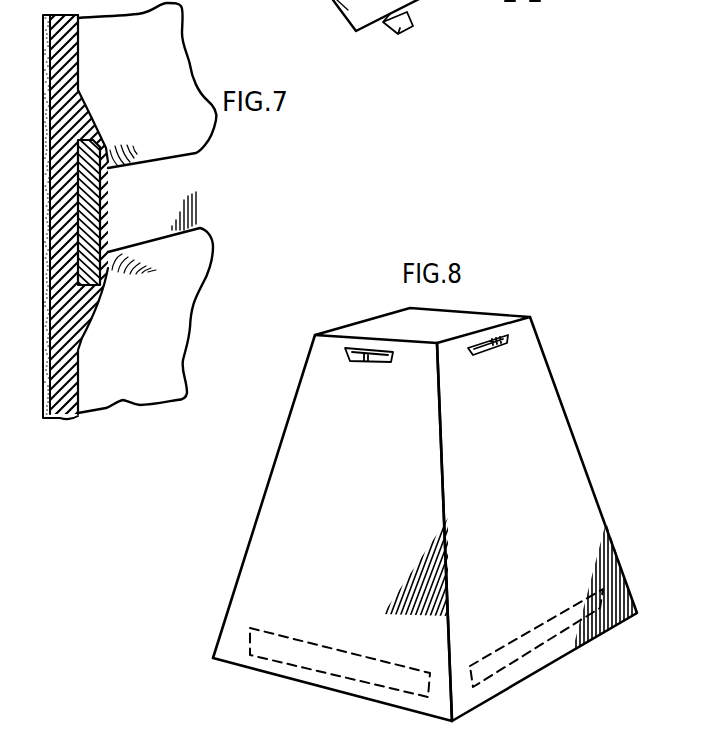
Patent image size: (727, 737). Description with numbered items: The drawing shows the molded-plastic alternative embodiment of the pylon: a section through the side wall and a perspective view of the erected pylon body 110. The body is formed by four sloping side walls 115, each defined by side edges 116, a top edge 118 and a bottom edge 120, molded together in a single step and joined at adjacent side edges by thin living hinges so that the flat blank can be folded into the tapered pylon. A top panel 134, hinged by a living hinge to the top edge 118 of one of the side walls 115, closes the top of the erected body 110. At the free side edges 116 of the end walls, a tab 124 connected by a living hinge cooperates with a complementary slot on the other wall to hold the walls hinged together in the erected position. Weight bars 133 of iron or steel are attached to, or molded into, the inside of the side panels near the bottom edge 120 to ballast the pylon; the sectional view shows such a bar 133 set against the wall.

In FIG. 8, the pylon body 110 is at (425, 504).
In FIG. 8, the side walls 115 is at (286, 462).
In FIG. 8, the side edges 116 is at (441, 446).
In FIG. 7, the top edge 118 is at (353, 15).
In FIG. 8, the top edge 118 is at (355, 338).
In FIG. 8, the bottom edge 120 is at (285, 676).
In FIG. 7, the tab 124 is at (399, 22).
In FIG. 7, the weight bar 133 is at (100, 186).
In FIG. 8, the weight bar 133 is at (281, 646).
In FIG. 8, the top panel 134 is at (468, 319).